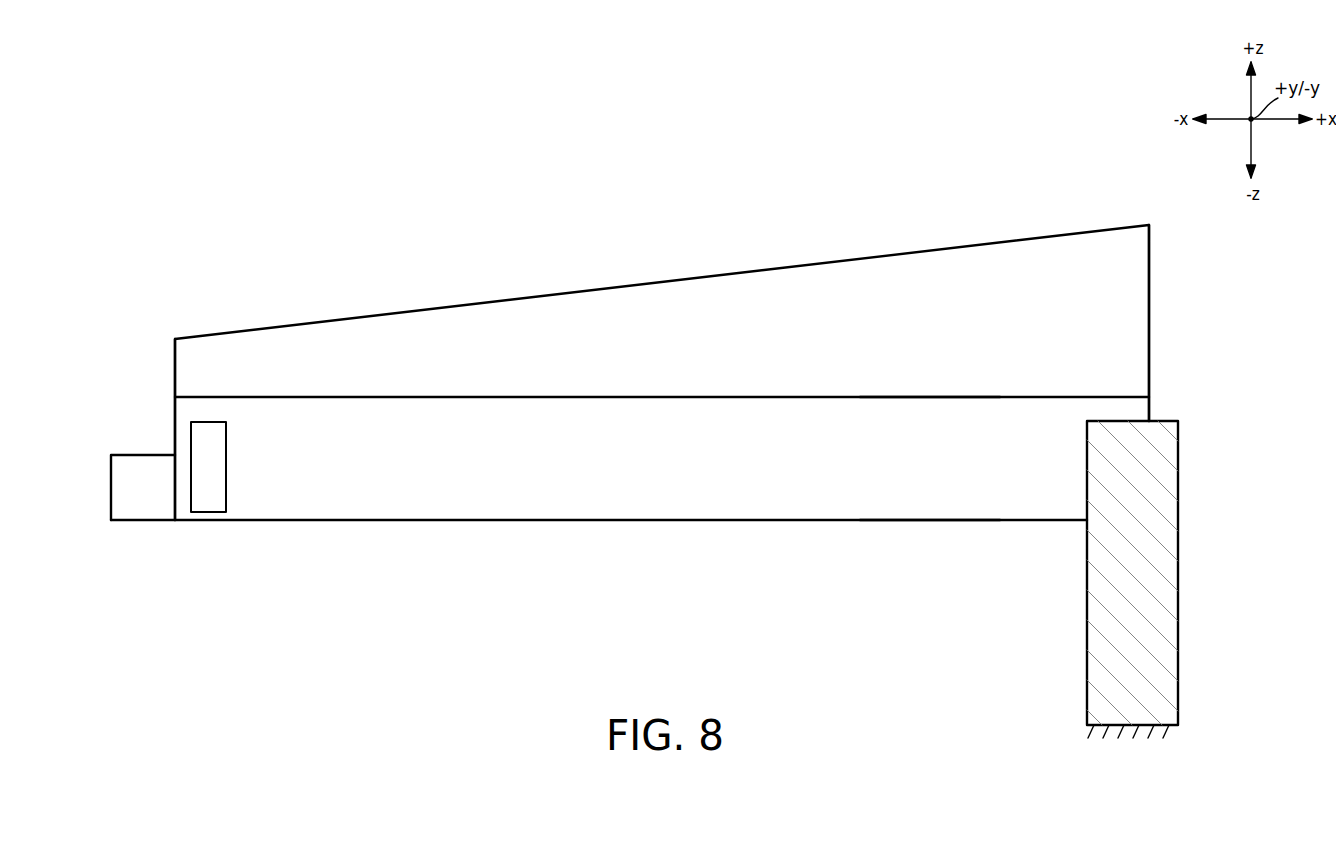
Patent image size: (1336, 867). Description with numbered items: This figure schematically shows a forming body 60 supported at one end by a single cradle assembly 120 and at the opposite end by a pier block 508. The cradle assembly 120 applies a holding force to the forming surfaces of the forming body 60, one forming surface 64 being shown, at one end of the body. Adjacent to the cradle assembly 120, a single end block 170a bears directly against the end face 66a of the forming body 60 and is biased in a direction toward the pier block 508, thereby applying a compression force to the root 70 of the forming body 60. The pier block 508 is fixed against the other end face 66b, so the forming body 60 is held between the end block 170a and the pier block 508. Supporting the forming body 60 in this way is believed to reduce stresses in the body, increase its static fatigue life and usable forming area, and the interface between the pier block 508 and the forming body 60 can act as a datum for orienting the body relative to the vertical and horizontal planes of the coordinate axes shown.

The forming body 60 is at (1022, 205).
The forming surface 64 is at (907, 487).
The end face 66a is at (172, 407).
The end face 66b is at (1098, 478).
The root 70 is at (635, 521).
The cradle assembly 120 is at (232, 418).
The end block 170a is at (130, 523).
The pier block 508 is at (1178, 617).